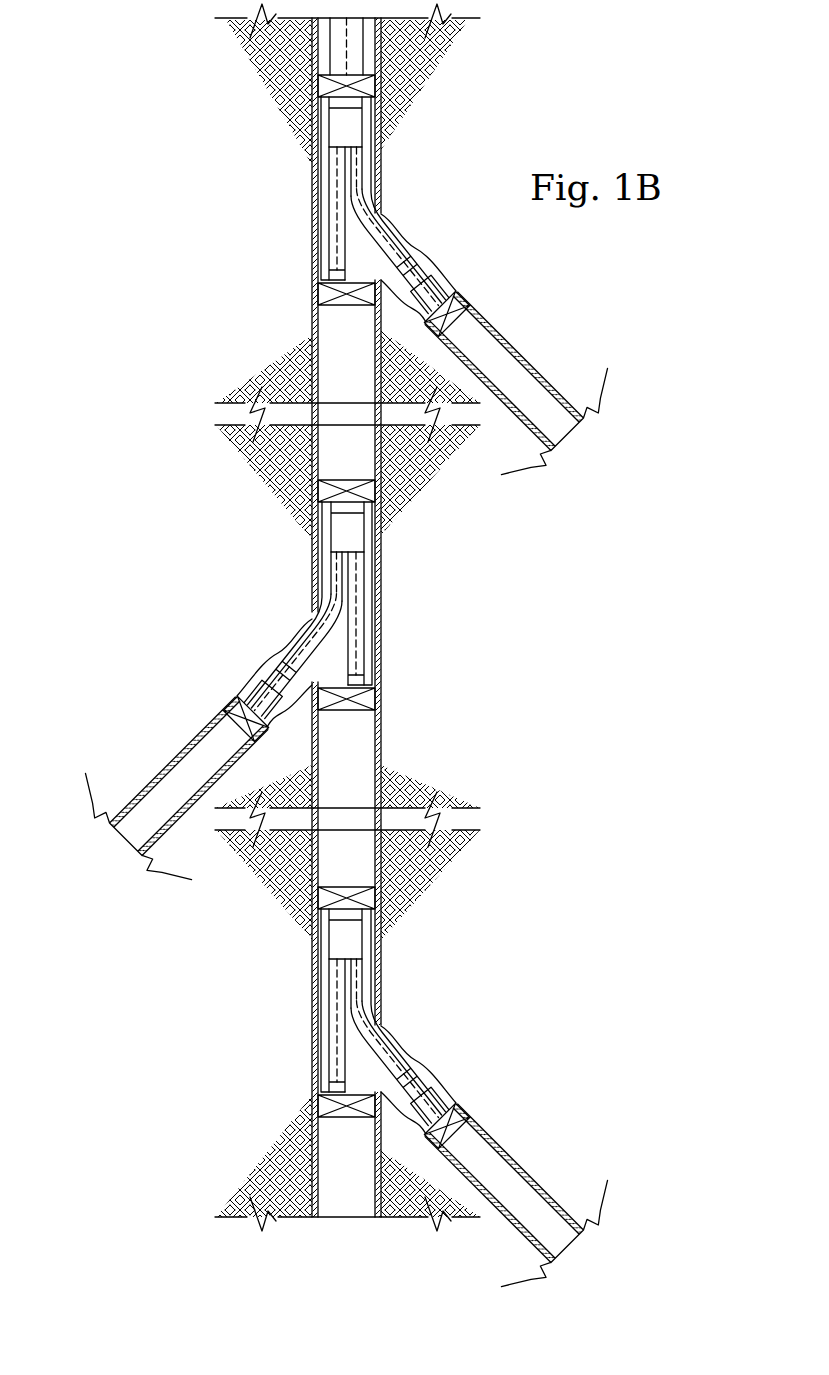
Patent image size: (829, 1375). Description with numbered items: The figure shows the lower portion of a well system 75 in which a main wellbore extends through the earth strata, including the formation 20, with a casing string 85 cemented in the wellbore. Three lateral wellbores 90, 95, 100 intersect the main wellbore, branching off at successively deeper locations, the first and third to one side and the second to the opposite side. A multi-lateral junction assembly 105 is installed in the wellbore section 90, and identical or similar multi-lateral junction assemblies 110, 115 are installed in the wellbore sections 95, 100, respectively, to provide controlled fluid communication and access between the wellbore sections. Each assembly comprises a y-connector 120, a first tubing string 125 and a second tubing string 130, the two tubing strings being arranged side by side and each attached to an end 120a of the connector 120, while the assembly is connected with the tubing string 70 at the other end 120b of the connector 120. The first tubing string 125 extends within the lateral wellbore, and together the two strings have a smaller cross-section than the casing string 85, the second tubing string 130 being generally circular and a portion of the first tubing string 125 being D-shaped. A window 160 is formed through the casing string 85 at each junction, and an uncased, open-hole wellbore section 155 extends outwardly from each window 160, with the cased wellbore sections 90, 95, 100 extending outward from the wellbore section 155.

The formation 20 is at (523, 628).
The tubing string 70 is at (335, 47).
The well system 75 is at (106, 125).
The casing string 85 is at (528, 360).
The lateral wellbore 90 is at (408, 236).
The lateral wellbore 95 is at (240, 686).
The lateral wellbore 100 is at (420, 1052).
The multi-lateral junction assembly 105 is at (290, 134).
The multi-lateral junction assembly 110 is at (405, 541).
The multi-lateral junction assembly 115 is at (292, 949).
The y-connector 120 is at (366, 118).
The end of the connector 120a is at (368, 163).
The end of the connector 120b is at (373, 89).
The first tubing string 125 is at (452, 288).
The second tubing string 130 is at (328, 212).
The wellbore section 155 is at (403, 216).
The window 160 is at (383, 270).